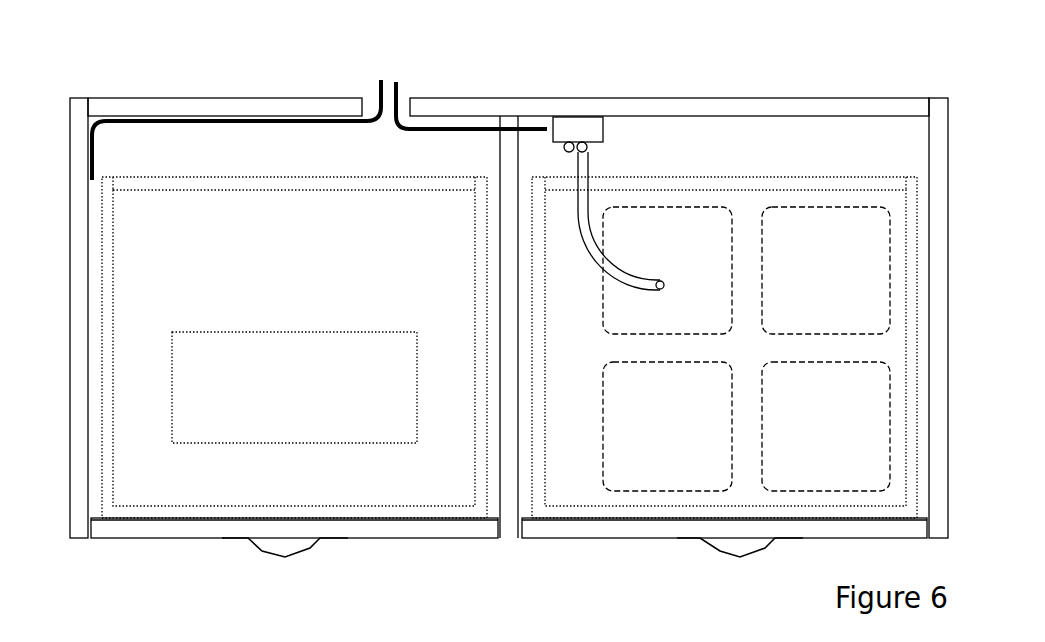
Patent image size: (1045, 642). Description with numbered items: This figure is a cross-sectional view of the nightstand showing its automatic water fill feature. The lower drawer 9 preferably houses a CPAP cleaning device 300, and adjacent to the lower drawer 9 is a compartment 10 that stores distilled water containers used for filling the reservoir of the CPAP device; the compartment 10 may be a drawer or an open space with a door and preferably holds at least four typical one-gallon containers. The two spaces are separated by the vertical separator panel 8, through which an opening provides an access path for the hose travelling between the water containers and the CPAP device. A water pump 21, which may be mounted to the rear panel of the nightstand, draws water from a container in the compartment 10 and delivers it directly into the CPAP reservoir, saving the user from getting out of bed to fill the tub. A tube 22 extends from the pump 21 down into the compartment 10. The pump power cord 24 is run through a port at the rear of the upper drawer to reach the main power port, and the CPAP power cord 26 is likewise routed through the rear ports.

The vertical separator panel 8 is at (511, 540).
The lower drawer 9 is at (335, 272).
The compartment 10 is at (603, 366).
The water pump 21 is at (593, 127).
The tube 22 is at (634, 282).
The pump power cord 24 is at (457, 131).
The power cord 26 is at (167, 119).
The CPAP cleaning device 300 is at (311, 398).